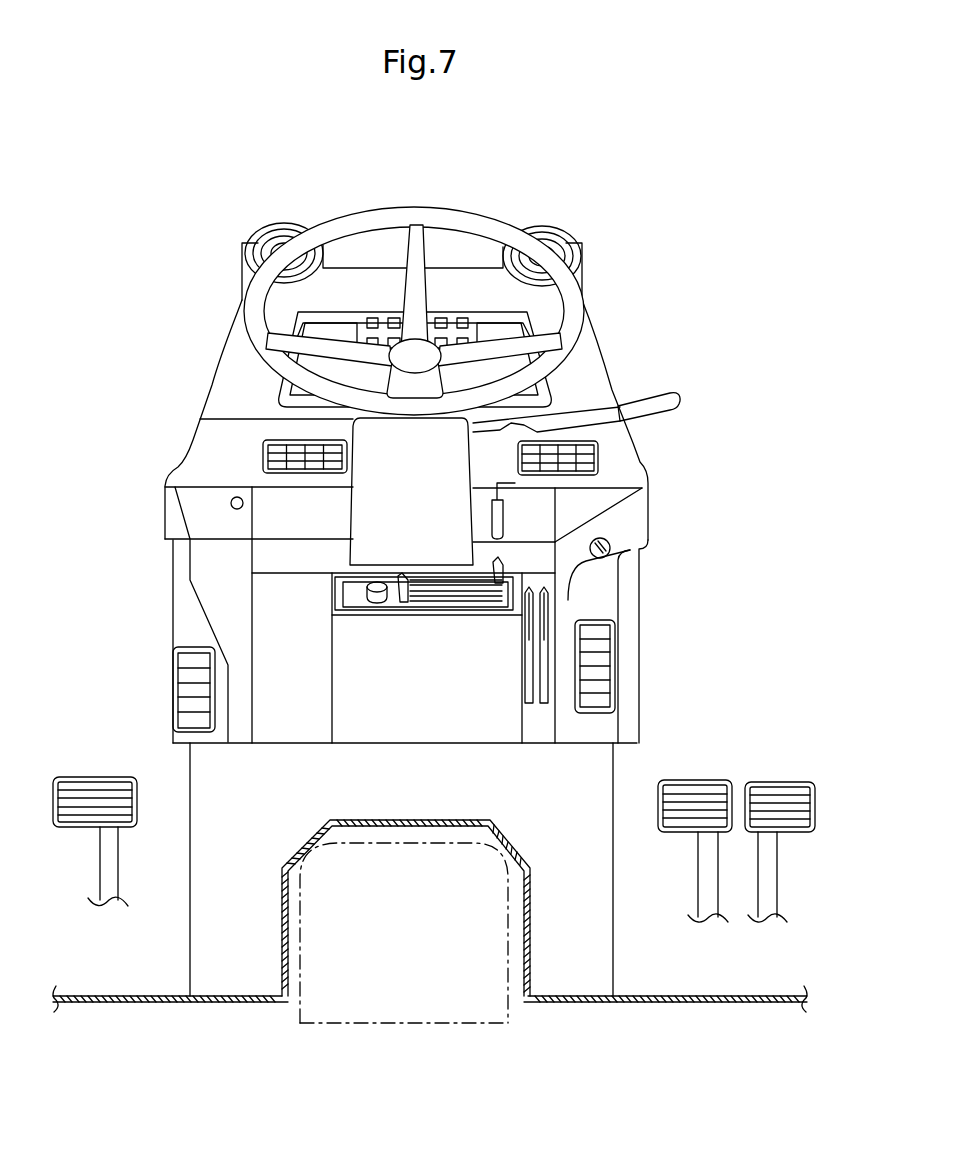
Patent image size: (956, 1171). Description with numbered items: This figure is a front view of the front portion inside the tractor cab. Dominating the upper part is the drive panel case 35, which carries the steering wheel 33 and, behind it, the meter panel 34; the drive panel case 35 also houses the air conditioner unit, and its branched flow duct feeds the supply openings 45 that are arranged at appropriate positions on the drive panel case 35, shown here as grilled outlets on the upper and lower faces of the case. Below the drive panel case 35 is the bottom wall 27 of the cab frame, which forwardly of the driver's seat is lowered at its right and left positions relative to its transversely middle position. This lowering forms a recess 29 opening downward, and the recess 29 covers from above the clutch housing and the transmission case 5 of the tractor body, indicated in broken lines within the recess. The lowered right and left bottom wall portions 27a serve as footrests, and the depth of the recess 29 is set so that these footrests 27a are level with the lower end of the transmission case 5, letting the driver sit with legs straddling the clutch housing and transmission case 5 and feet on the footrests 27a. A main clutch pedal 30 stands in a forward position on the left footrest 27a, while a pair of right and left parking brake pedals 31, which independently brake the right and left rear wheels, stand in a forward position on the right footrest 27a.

The second transmission case 5 is at (423, 1023).
The bottom wall 27 is at (398, 820).
The bottom wall portions 27a is at (121, 996).
The recess 29 is at (327, 955).
The main clutch pedal 30 is at (98, 777).
The parking brake pedals 31 is at (762, 782).
The steering wheel 33 is at (413, 207).
The meter panel 34 is at (527, 317).
The drive panel case 35 is at (217, 340).
The supply openings 45 is at (270, 227).